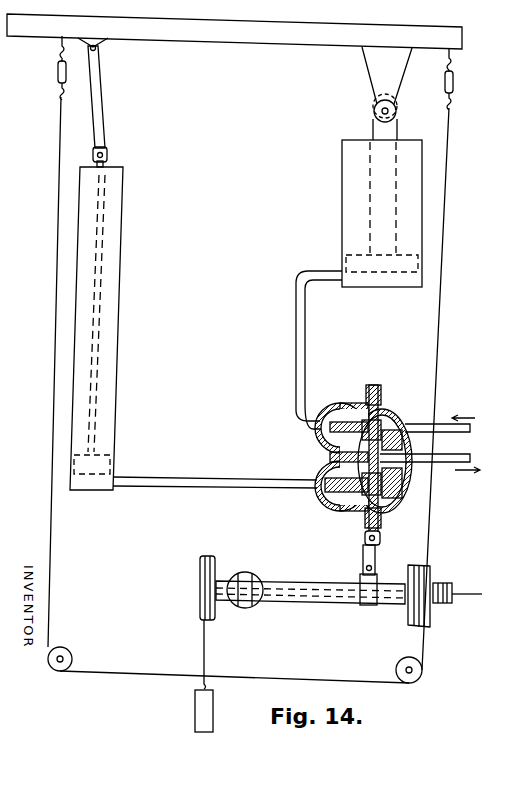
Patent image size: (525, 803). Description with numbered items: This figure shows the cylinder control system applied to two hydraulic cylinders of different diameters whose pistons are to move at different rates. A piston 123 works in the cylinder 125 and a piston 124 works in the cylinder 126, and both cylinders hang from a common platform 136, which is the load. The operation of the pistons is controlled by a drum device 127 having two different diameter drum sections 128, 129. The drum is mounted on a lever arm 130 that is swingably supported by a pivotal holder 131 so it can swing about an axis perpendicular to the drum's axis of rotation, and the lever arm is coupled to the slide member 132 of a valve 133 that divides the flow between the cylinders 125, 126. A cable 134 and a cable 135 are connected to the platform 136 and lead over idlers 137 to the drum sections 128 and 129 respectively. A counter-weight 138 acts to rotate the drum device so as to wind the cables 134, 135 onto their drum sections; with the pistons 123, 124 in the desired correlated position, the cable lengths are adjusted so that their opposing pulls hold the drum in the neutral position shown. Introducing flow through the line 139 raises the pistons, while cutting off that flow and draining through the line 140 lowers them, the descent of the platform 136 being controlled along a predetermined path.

The piston 123 is at (135, 209).
The piston 124 is at (374, 163).
The cylinder 125 is at (121, 285).
The cylinder 126 is at (343, 220).
The drum device 127 is at (483, 600).
The drum section 128 is at (422, 565).
The drum section 129 is at (448, 583).
The lever arm 130 is at (320, 577).
The pivotal holder 131 is at (248, 575).
The slide member 132 is at (406, 379).
The valve 133 is at (363, 398).
The cable 134 is at (55, 345).
The cable 135 is at (445, 245).
The platform 136 is at (284, 11).
The idler 137 is at (70, 652).
The counter-weight 138 is at (195, 712).
The line 139 is at (432, 424).
The line 140 is at (470, 460).